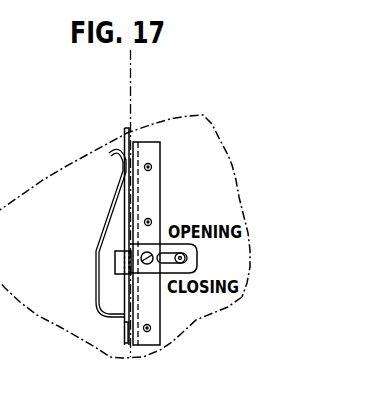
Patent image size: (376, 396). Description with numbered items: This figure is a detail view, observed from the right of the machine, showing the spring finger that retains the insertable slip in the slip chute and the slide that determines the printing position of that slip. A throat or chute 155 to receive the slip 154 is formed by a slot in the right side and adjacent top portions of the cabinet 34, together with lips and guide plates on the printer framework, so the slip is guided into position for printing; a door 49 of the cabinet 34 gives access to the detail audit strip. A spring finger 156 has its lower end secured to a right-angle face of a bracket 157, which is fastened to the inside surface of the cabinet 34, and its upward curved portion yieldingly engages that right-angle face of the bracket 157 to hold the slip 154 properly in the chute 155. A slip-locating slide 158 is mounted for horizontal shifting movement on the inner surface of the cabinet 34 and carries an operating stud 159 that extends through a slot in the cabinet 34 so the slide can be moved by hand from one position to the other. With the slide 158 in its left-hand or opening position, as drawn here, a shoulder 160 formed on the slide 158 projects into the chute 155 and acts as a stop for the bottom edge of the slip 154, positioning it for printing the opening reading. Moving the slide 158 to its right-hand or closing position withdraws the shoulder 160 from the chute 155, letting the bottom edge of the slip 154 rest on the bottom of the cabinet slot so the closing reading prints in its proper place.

The cabinet 34 is at (187, 319).
The door 49 is at (125, 206).
The insertable slip 154 is at (132, 92).
The chute 155 is at (127, 128).
The spring finger 156 is at (114, 217).
The bracket 157 is at (153, 309).
The slip-locating slide 158 is at (190, 246).
The operating stud 159 is at (118, 262).
The shoulder 160 is at (117, 252).